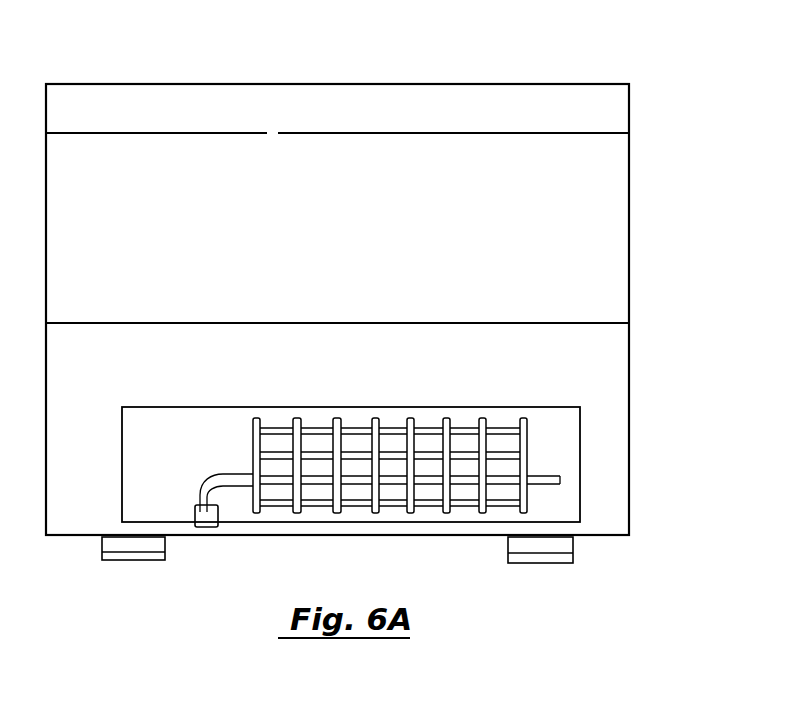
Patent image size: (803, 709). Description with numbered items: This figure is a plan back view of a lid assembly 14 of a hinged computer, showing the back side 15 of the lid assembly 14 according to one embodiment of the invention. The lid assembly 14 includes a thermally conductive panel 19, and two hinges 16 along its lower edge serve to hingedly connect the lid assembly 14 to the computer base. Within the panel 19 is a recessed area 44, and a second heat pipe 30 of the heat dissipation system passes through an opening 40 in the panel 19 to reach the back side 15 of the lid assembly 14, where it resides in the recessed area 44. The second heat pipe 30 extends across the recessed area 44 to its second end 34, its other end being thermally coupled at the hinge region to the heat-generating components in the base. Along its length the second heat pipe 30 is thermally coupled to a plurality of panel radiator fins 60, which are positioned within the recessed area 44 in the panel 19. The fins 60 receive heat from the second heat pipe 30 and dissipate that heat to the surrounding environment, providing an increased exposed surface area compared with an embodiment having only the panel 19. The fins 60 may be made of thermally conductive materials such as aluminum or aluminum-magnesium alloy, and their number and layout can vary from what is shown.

The lid assembly 14 is at (629, 228).
The back side 15 is at (288, 212).
The hinges 16 is at (132, 552).
The thermally conductive panel 19 is at (128, 188).
The second heat pipe 30 is at (220, 483).
The second end 34 is at (553, 478).
The opening 40 is at (195, 517).
The recessed area 44 is at (175, 443).
The panel radiator fins 60 is at (447, 418).